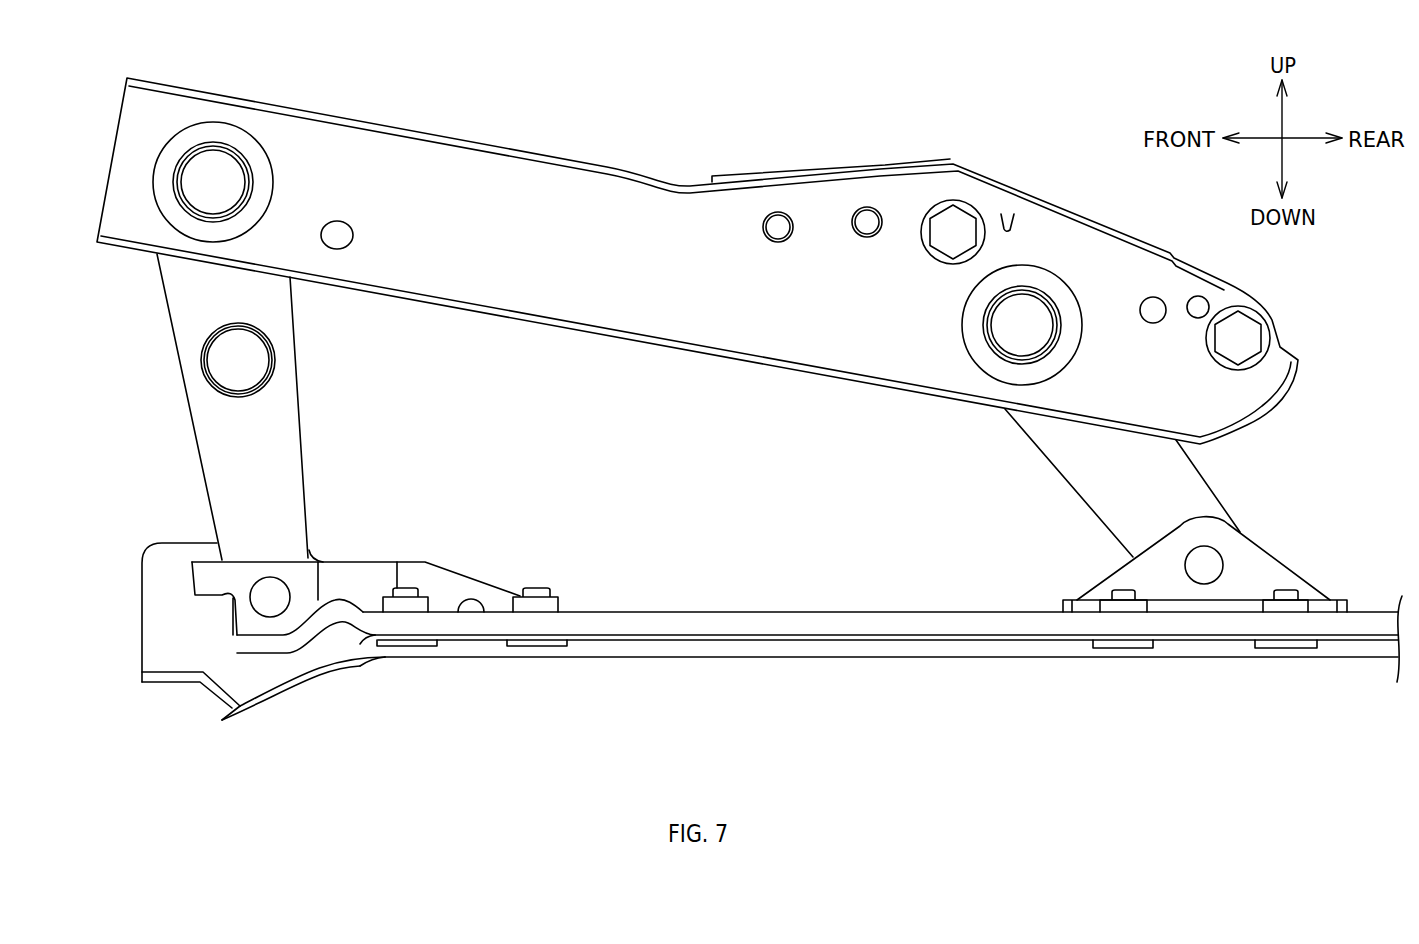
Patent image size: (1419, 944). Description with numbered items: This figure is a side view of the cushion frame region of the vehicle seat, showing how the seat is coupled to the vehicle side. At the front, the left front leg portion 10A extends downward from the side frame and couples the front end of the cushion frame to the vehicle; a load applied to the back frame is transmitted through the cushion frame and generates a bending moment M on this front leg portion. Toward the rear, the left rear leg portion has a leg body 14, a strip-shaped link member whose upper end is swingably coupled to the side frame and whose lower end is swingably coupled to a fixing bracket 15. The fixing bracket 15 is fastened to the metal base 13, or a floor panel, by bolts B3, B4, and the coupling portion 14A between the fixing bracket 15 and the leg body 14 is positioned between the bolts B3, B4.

The left front leg portion 10A is at (300, 410).
The leg body 14 is at (1060, 470).
The coupling portion 14A is at (1203, 566).
The fixing bracket 15 is at (1292, 566).
The base 13 is at (937, 657).
The bolt B3 is at (1123, 604).
The bolt B4 is at (1286, 604).
The bending moment M is at (268, 596).